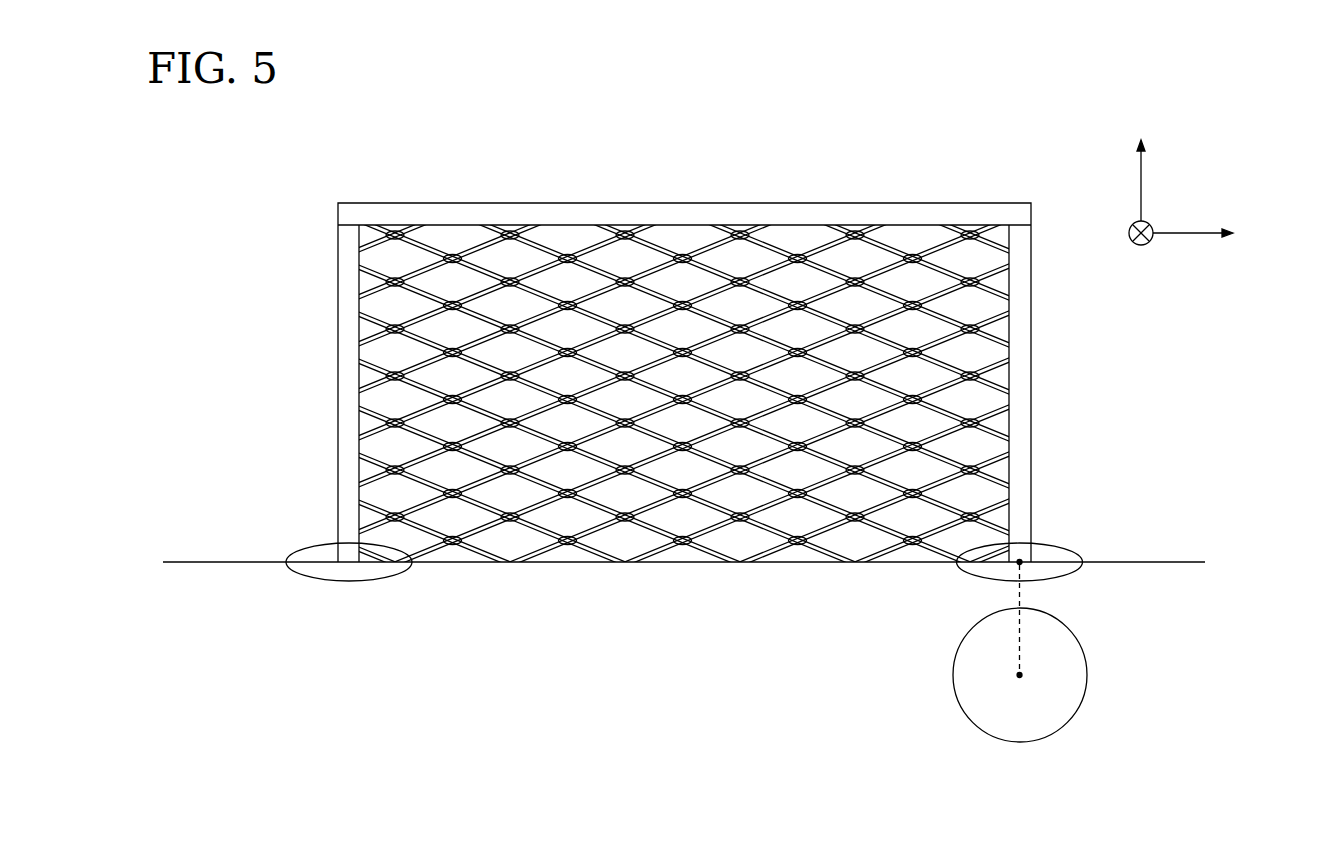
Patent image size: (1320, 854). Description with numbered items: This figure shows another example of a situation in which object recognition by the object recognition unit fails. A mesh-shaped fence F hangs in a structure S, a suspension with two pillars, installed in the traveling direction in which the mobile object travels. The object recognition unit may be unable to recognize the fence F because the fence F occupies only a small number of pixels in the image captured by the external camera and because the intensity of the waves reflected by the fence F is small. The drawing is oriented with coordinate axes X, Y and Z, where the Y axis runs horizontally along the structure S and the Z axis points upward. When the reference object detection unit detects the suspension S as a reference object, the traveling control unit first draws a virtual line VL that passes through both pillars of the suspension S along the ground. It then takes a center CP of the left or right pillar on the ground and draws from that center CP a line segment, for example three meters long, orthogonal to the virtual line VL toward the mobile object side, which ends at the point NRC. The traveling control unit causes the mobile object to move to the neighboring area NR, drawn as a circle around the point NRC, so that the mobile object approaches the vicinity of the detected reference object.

The fence F is at (953, 313).
The structure S is at (1032, 393).
The virtual line VL is at (700, 563).
The center of pillar CP is at (1022, 564).
The neighboring area NR is at (1087, 675).
The point NRC is at (1017, 675).
The X axis X is at (1133, 247).
The Y axis Y is at (1203, 234).
The Z axis Z is at (1141, 164).